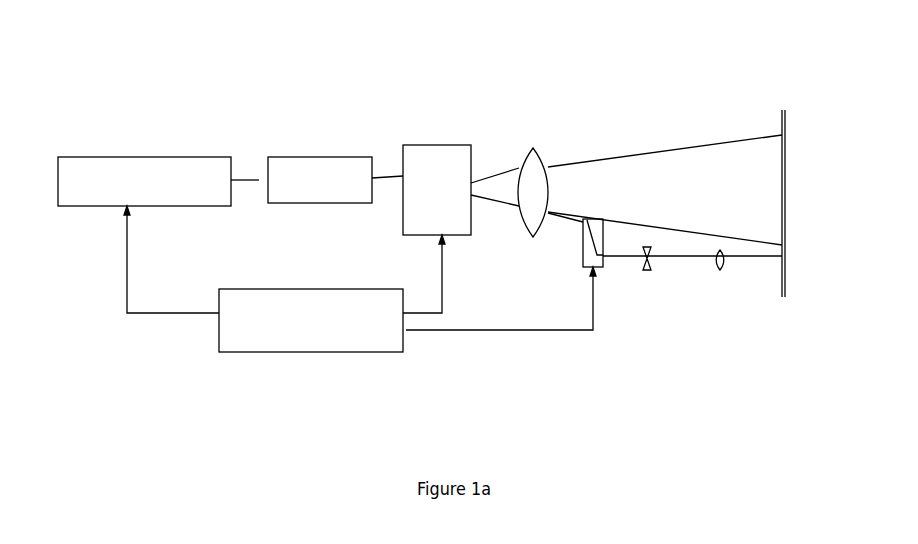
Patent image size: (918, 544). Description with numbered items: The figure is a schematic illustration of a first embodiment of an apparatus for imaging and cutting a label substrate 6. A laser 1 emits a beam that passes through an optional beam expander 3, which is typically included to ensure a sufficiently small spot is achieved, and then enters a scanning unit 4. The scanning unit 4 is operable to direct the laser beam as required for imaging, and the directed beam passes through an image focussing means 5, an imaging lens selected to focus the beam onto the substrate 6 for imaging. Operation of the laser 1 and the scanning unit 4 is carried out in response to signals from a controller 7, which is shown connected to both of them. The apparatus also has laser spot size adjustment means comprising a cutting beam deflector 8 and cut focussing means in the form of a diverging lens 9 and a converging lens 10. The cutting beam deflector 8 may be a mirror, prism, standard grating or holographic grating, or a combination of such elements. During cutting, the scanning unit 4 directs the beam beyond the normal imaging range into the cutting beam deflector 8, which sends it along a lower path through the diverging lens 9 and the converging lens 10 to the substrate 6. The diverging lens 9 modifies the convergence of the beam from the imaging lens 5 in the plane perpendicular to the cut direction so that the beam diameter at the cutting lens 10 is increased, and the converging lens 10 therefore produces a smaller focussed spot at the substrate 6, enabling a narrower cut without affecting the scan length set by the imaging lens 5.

The laser 1 is at (139, 153).
The beam expander 3 is at (327, 152).
The scanning unit 4 is at (432, 138).
The image focussing means 5 is at (534, 138).
The label substrate 6 is at (776, 120).
The controller 7 is at (265, 355).
The cutting beam deflector 8 is at (576, 255).
The diverging lens 9 is at (648, 272).
The converging lens 10 is at (727, 272).